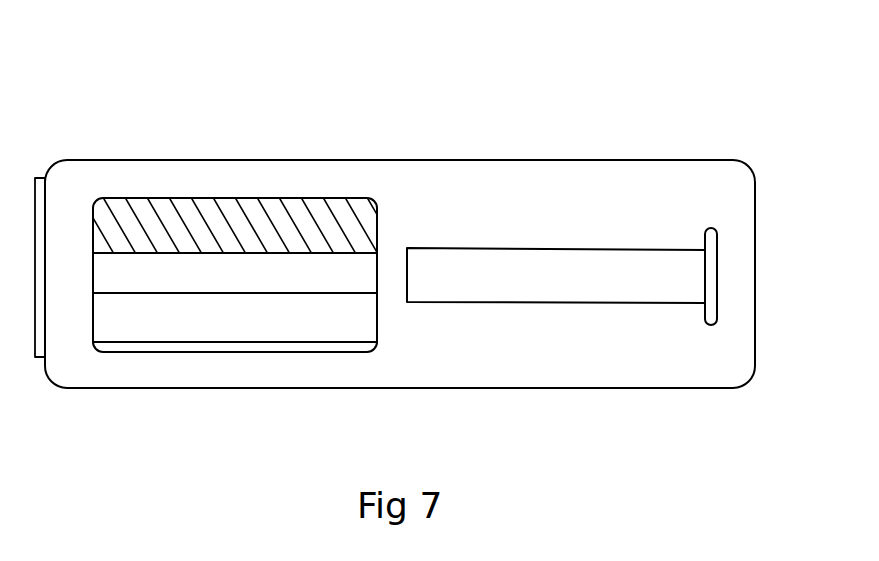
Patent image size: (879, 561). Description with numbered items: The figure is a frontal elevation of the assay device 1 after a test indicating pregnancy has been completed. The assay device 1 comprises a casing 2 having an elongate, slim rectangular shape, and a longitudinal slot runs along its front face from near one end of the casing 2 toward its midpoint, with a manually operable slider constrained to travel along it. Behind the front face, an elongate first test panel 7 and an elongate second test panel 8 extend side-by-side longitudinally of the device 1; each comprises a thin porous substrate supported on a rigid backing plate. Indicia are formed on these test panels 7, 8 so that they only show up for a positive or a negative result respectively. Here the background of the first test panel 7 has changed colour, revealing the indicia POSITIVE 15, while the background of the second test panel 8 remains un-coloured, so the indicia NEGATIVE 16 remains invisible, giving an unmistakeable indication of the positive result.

The assay device 1 is at (647, 118).
The casing 2 is at (530, 367).
The first test panel 7 is at (110, 210).
The second test panel 8 is at (113, 323).
The indicia POSITIVE 15 is at (272, 205).
The indicia NEGATIVE 16 is at (252, 338).